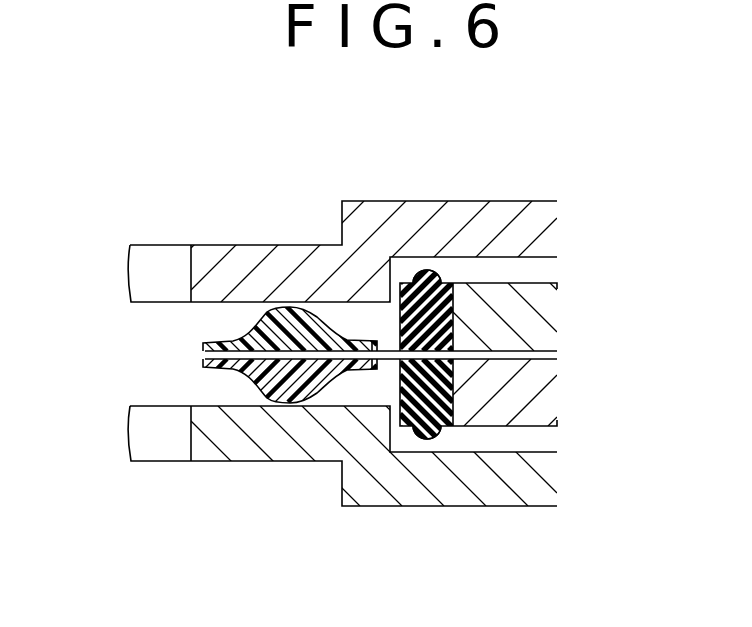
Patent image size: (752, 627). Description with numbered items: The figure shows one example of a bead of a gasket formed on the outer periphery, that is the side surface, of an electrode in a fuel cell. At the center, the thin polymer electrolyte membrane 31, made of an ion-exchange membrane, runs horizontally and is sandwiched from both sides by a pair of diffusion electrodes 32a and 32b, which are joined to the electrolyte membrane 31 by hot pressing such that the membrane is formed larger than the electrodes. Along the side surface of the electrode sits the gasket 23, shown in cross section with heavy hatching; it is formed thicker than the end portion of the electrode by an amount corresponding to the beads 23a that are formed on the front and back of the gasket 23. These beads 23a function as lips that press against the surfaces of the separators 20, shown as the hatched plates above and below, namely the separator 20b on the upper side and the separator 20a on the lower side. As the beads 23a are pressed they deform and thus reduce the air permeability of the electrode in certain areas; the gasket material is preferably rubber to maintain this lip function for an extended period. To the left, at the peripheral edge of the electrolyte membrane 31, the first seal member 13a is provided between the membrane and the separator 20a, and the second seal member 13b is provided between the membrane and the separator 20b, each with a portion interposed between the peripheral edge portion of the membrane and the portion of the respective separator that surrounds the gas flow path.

The separator 20 is at (394, 349).
The separator 20b is at (520, 227).
The separator 20a is at (523, 483).
The gasket 23 is at (398, 321).
The bead 23a is at (435, 259).
The cathode side diffusion electrode 32b is at (535, 321).
The anode side diffusion electrode 32a is at (541, 406).
The electrolyte membrane 31 is at (548, 352).
The second seal member 13b is at (267, 343).
The first seal member 13a is at (267, 371).